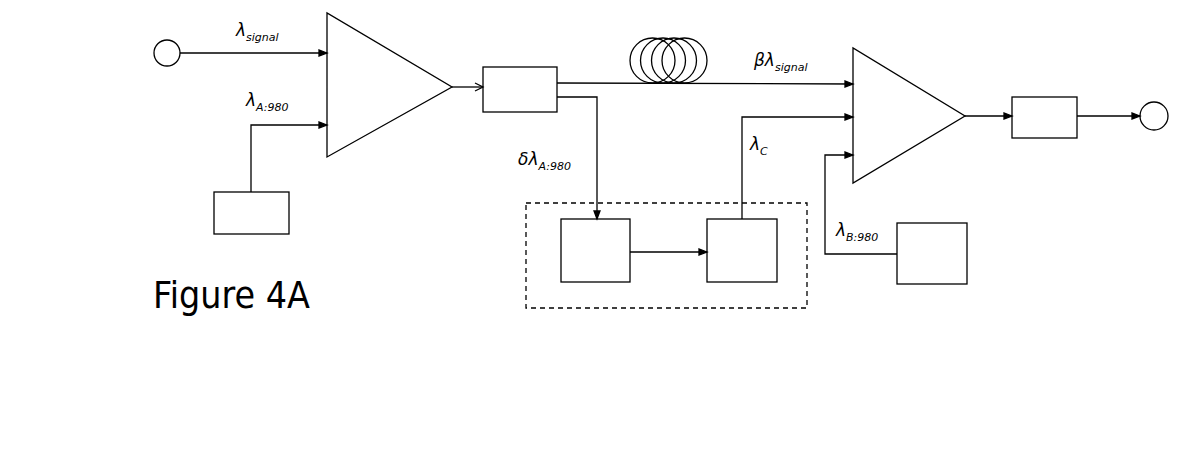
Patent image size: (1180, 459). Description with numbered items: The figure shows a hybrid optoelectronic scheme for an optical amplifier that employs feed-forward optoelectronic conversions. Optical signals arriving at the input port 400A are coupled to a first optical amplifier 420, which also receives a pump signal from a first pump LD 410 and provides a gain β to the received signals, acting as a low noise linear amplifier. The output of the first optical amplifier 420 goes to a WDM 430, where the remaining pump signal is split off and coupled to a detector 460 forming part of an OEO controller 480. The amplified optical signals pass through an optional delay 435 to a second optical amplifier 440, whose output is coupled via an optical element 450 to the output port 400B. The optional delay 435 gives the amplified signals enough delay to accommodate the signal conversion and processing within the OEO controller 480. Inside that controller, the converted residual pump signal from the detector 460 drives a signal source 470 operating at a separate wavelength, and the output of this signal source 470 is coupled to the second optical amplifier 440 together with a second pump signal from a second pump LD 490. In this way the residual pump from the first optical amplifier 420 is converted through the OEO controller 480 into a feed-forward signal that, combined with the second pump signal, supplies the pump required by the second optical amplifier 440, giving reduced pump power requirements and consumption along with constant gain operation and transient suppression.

The input port 400A is at (139, 53).
The output port 400B is at (1123, 138).
The first pump LD 410 is at (270, 178).
The first optical amplifier 420 is at (389, 85).
The WDM 430 is at (504, 89).
The optional delay 435 is at (668, 46).
The second optical amplifier 440 is at (909, 115).
The optical element 450 is at (1021, 117).
The detector 460 is at (595, 250).
The signal source 470 is at (741, 198).
The OEO controller 480 is at (666, 255).
The second pump LD 490 is at (896, 218).